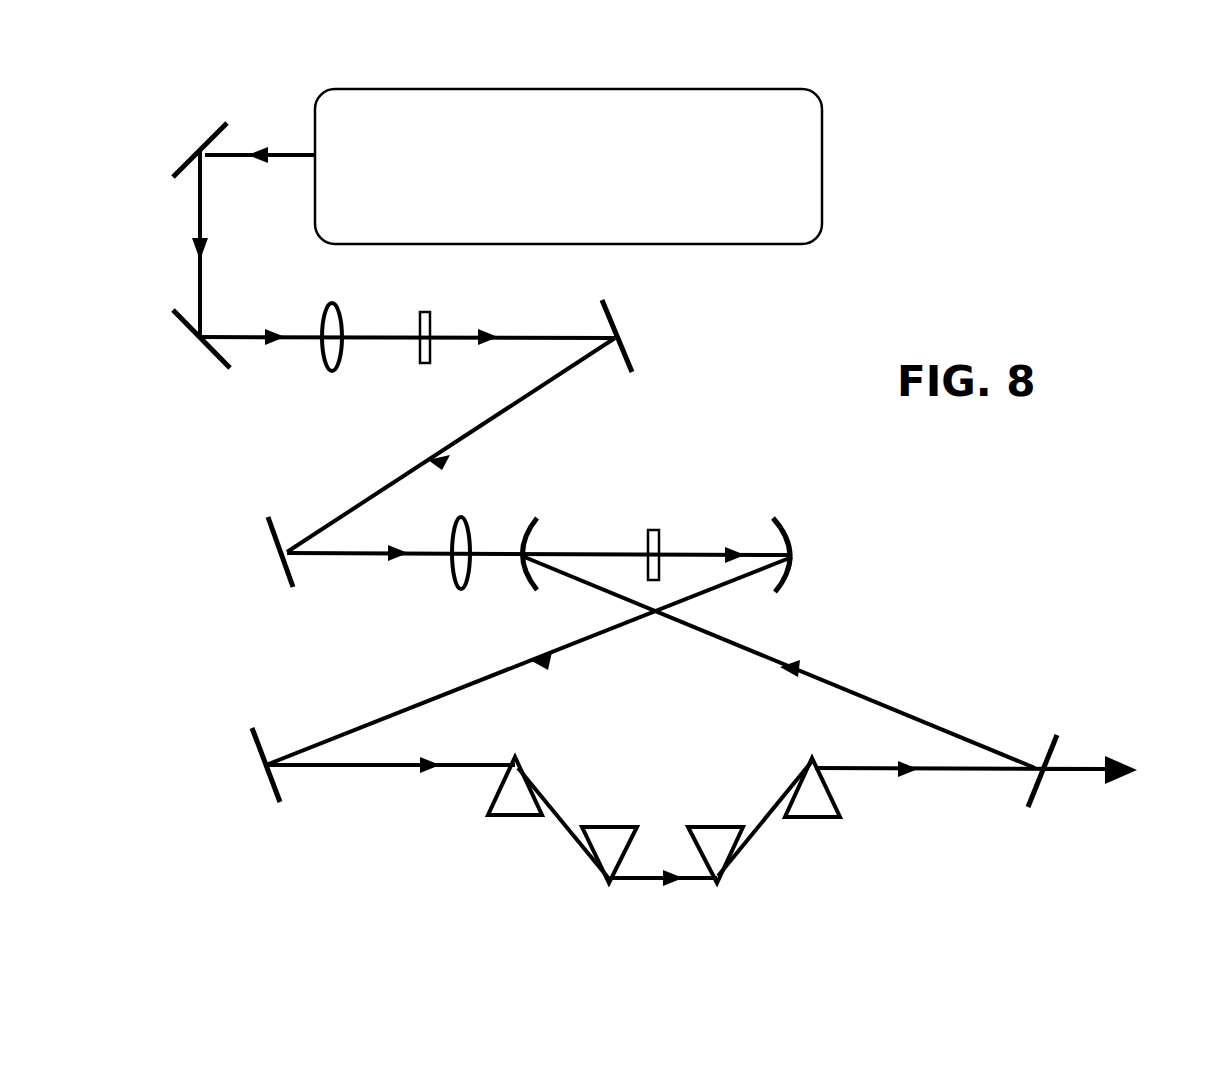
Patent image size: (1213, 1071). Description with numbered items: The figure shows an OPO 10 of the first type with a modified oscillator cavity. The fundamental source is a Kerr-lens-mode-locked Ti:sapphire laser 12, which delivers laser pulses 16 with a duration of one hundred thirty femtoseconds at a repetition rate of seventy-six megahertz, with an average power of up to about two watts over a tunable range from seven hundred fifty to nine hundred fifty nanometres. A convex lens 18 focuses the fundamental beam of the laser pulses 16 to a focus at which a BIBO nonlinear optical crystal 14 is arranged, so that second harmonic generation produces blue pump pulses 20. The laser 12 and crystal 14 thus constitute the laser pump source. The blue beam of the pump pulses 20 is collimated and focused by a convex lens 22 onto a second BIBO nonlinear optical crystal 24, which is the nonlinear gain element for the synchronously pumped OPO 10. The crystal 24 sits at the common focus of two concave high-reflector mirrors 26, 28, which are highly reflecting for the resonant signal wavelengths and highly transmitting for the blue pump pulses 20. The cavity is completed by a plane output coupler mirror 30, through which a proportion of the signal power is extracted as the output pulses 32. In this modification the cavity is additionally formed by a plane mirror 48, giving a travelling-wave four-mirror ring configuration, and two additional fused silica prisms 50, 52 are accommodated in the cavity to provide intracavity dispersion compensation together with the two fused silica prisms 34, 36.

The OPO 10 is at (912, 621).
The Kerr-lens-mode-locked Ti:sapphire laser 12 is at (825, 190).
The nonlinear optical crystal 14 is at (428, 308).
The laser pulses 16 is at (253, 140).
The convex lens 18 is at (332, 300).
The pump pulses 20 is at (365, 490).
The convex lens 22 is at (462, 595).
The nonlinear optical crystal 24 is at (660, 540).
The concave high-reflector mirror 26 is at (523, 534).
The concave high-reflector mirror 28 is at (783, 537).
The plane output coupler mirror 30 is at (1041, 774).
The output pulses 32 is at (1082, 760).
The fused silica prism 34 is at (515, 808).
The fused silica prism 36 is at (609, 833).
The plane mirror 48 is at (272, 795).
The fused silica prism 50 is at (715, 833).
The fused silica prism 52 is at (812, 809).